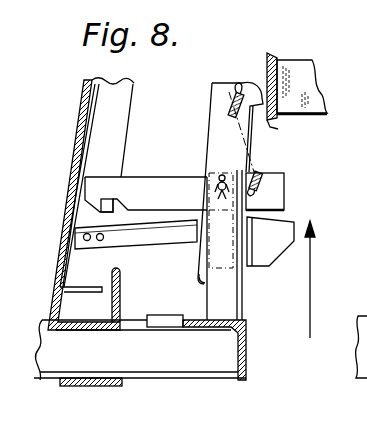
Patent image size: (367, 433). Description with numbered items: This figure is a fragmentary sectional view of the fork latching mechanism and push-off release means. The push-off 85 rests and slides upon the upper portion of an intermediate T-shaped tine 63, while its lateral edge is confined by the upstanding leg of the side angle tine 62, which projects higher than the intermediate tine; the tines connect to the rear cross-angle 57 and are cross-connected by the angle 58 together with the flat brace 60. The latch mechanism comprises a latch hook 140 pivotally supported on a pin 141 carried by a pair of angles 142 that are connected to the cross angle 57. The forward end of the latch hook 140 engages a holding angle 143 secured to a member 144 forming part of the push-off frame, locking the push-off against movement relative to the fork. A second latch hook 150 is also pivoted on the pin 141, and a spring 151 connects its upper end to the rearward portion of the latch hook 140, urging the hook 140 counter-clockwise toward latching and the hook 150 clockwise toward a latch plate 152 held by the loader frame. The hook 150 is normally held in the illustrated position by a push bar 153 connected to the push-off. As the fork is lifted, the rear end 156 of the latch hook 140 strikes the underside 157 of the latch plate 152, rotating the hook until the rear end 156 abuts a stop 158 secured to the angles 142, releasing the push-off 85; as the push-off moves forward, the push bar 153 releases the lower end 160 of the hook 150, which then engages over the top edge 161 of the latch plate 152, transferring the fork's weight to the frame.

The push-off 85 is at (76, 133).
The member of the push-off frame 144 is at (122, 94).
The holding angle 143 is at (115, 198).
The latch hook 140 is at (167, 177).
The push bar 153 is at (131, 239).
The cross angle 58 is at (123, 284).
The side angle tine 62 is at (168, 320).
The intermediate T-shaped tine 63 is at (157, 372).
The rear cross-angle 57 is at (247, 365).
The flat brace 60 is at (78, 386).
The angles 142 is at (228, 300).
The second latch hook 150 is at (242, 89).
The spring 151 is at (250, 154).
The pivot pin 141 is at (228, 181).
The rear end of the latch hook 156 is at (280, 192).
The stop 158 is at (278, 248).
The lower end of the latch hook 160 is at (204, 281).
The top edge of the latch plate 161 is at (271, 54).
The latch plate 152 is at (284, 65).
The underside of the latch plate 157 is at (278, 129).